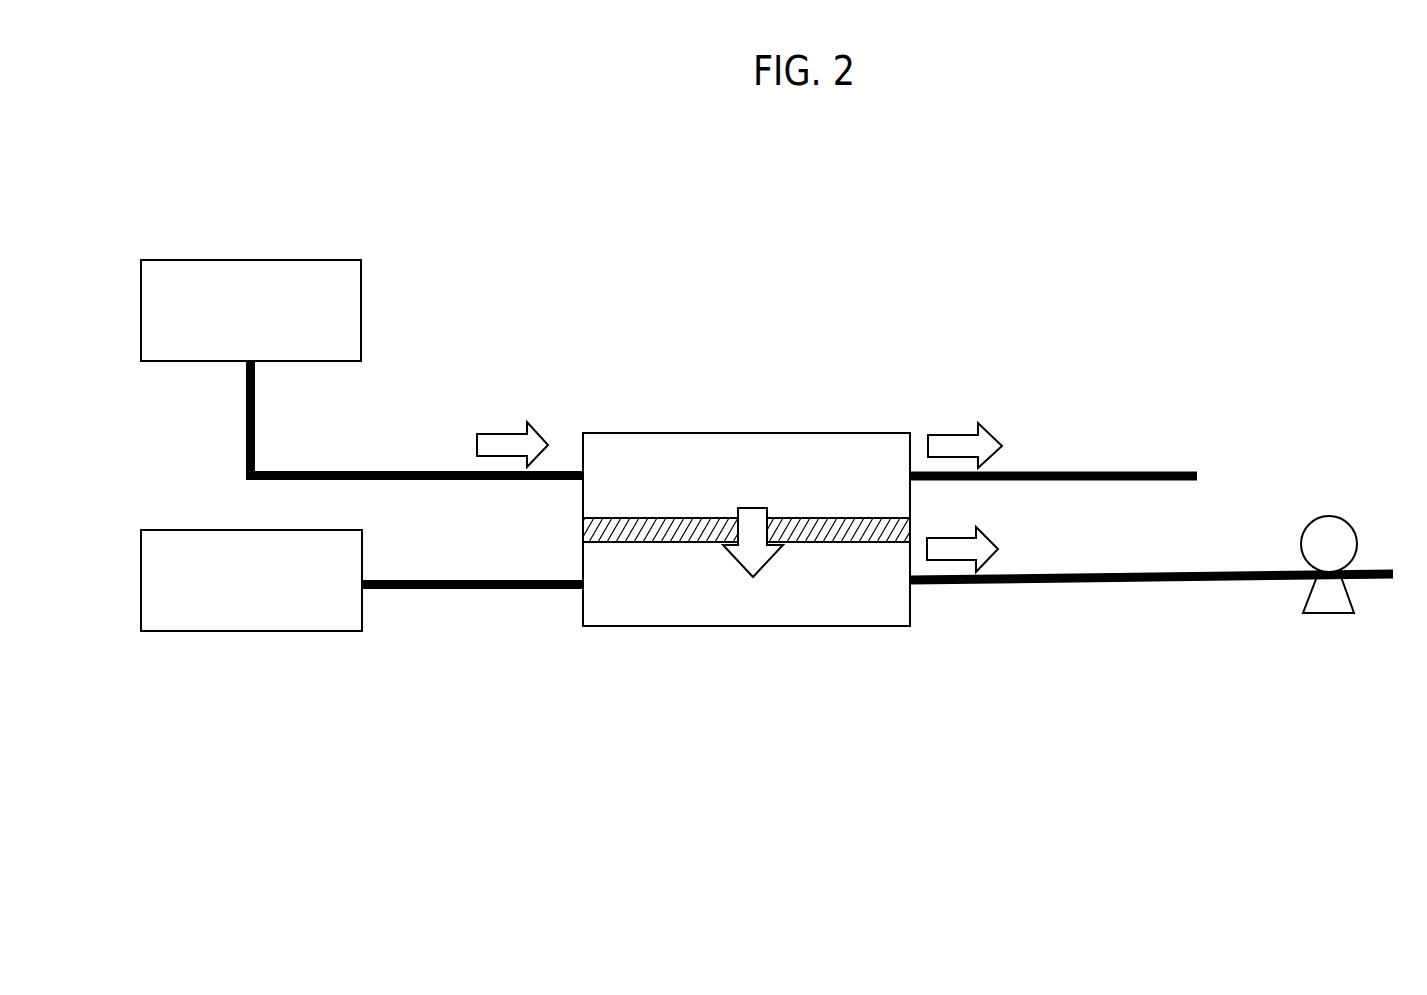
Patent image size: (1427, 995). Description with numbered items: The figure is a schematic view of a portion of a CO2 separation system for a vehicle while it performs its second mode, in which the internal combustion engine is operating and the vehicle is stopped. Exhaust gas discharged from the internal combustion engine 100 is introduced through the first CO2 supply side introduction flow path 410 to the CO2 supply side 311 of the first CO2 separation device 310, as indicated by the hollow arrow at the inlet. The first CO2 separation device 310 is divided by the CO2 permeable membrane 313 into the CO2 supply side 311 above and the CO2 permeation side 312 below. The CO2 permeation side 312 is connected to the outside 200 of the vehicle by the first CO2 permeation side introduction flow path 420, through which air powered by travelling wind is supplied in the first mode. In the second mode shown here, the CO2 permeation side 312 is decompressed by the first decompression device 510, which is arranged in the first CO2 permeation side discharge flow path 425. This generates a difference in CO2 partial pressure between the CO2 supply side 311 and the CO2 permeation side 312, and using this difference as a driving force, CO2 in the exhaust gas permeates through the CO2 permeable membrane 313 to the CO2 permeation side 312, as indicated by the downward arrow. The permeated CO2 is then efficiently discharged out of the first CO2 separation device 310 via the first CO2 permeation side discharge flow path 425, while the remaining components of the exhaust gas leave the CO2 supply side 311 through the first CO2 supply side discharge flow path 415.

The internal combustion engine 100 is at (265, 303).
The outside 200 is at (226, 601).
The first CO2 separation device 310 is at (709, 525).
The CO2 supply side 311 is at (848, 450).
The CO2 permeation side 312 is at (835, 608).
The CO2 permeable membrane 313 is at (623, 533).
The first CO2 supply side introduction flow path 410 is at (402, 470).
The first CO2 supply side discharge flow path 415 is at (1140, 470).
The first CO2 permeation side introduction flow path 420 is at (448, 590).
The first CO2 permeation side discharge flow path 425 is at (1125, 580).
The first decompression device 510 is at (1329, 540).